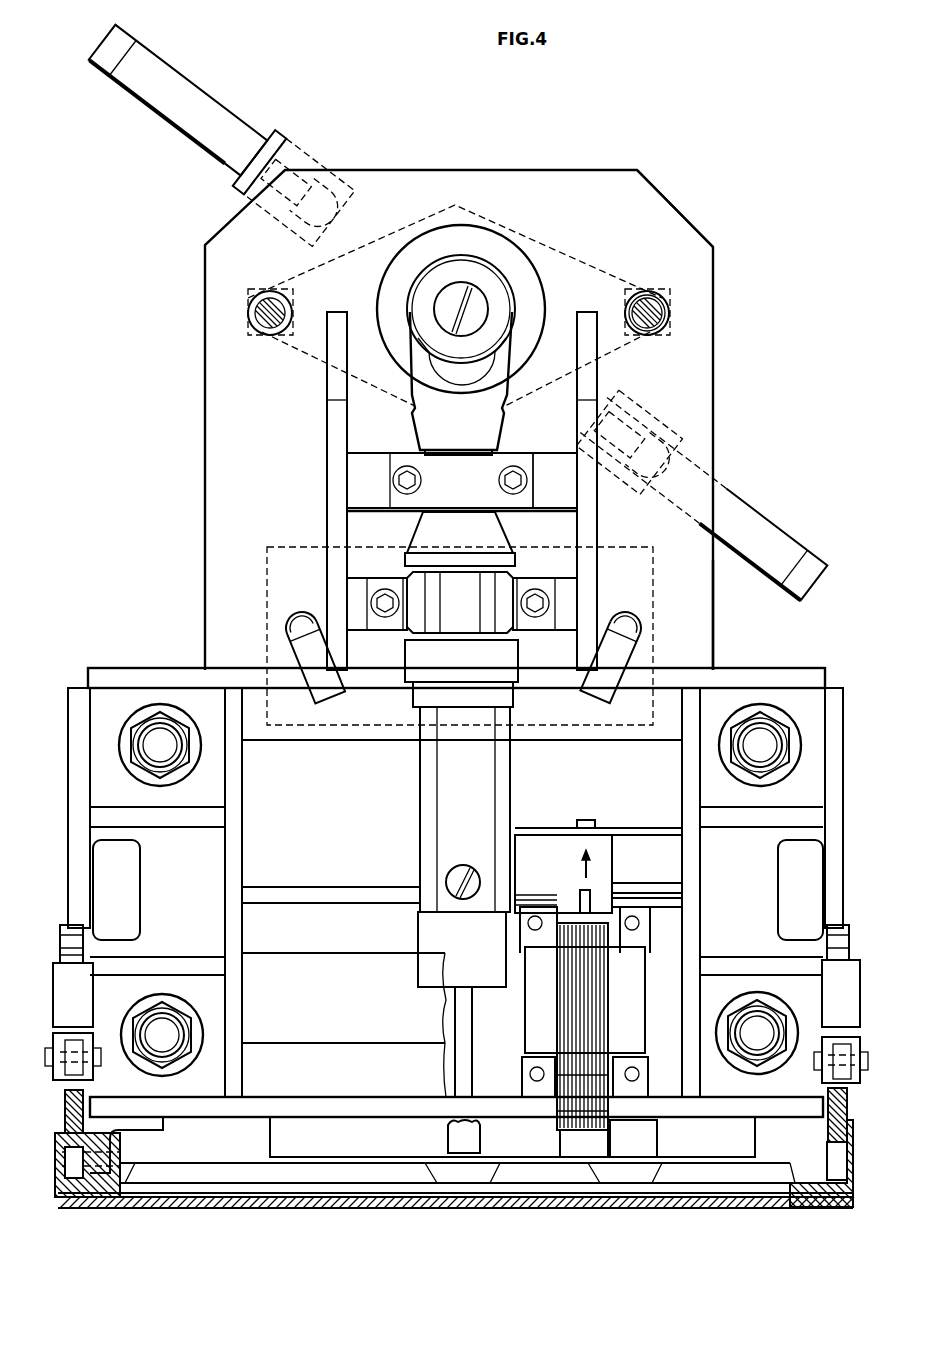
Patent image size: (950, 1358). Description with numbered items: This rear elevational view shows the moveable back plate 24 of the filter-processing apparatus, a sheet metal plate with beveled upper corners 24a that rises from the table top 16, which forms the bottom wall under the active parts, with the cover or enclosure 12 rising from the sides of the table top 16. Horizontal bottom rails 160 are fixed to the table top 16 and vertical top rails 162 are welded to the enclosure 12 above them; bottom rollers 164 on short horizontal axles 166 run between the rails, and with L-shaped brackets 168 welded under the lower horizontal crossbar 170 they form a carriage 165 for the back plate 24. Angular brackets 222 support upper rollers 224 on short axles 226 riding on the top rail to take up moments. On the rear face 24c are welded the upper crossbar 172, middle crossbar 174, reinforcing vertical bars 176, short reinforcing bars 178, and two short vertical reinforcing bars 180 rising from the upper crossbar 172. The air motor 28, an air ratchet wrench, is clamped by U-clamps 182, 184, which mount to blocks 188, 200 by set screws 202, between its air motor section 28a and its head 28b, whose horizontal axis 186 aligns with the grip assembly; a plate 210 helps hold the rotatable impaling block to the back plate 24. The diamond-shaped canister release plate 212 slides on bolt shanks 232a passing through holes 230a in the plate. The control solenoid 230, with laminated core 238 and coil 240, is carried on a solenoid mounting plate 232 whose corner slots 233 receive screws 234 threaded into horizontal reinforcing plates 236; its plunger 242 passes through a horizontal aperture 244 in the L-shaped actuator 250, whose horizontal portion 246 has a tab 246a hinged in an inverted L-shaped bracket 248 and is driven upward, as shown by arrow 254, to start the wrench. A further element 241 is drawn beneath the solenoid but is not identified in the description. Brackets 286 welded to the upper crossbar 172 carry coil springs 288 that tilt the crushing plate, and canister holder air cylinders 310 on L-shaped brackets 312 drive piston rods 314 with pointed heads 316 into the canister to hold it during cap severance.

The cover or enclosure 12 is at (855, 1150).
The table top 16 is at (205, 1210).
The back plate 24 is at (713, 272).
The beveled upper corners 24a is at (680, 218).
The rear face 24c is at (714, 622).
The air motor 28 is at (512, 538).
The air motor section 28a is at (420, 800).
The air ratchet wrench head 28b is at (512, 320).
The horizontal bottom rails 160 is at (75, 1210).
The vertical top rails 162 is at (65, 1105).
The bottom rollers 164 is at (65, 1165).
The carriage 165 is at (255, 1130).
The horizontal axles 166 is at (110, 1153).
The L-shaped brackets 168 is at (155, 1130).
The lower horizontal crossbar 170 is at (352, 1132).
The upper crossbar 172 is at (285, 700).
The middle crossbar 174 is at (323, 886).
The reinforcing vertical bars 176 is at (234, 806).
The reinforcing bars 178 is at (172, 830).
The vertical reinforcing bars 180 is at (338, 415).
The U-clamp 182 is at (398, 462).
The U-clamp 184 is at (385, 590).
The axis 186 is at (458, 300).
The block 188 is at (565, 482).
The block 200 is at (565, 606).
The set screws 202 is at (515, 466).
The plate 210 is at (478, 228).
The canister release plate 212 is at (583, 248).
The angular shaped brackets 222 is at (78, 826).
The upper rollers 224 is at (85, 1075).
The axles 226 is at (96, 1040).
The solenoid 230 is at (500, 1032).
The holes 230a is at (262, 312).
The solenoid mounting plate 232 is at (604, 1118).
The bolt shanks 232a is at (662, 322).
The slots 233 is at (650, 1112).
The screws 234 is at (640, 930).
The horizontal reinforcing plates 236 is at (334, 938).
The laminated core 238 is at (596, 1005).
The coil 240 is at (625, 1030).
The stop block 241 is at (540, 1135).
The plunger 242 is at (592, 895).
The horizontal aperture 244 is at (592, 935).
The horizontal portion 246 is at (545, 925).
The tab 246a is at (578, 820).
The inverted L-shaped bracket 248 is at (556, 828).
The L-shaped actuator 250 is at (600, 848).
The arrow 254 is at (582, 862).
The brackets 286 is at (325, 665).
The coil springs 288 is at (292, 630).
The canister holder air cylinders 310 is at (210, 108).
The brackets 312 is at (300, 158).
The piston rod 314 is at (270, 230).
The pointed head 316 is at (340, 212).